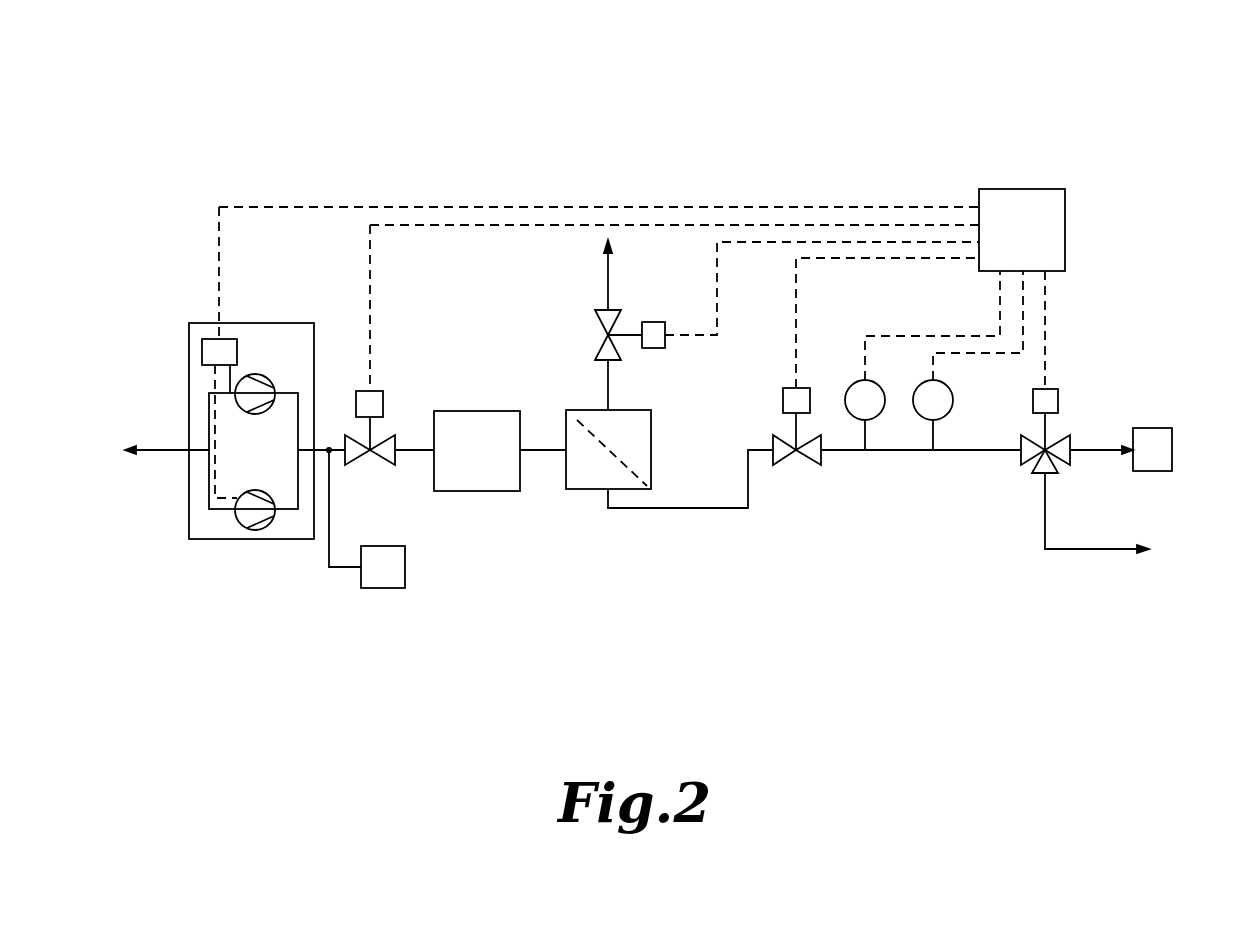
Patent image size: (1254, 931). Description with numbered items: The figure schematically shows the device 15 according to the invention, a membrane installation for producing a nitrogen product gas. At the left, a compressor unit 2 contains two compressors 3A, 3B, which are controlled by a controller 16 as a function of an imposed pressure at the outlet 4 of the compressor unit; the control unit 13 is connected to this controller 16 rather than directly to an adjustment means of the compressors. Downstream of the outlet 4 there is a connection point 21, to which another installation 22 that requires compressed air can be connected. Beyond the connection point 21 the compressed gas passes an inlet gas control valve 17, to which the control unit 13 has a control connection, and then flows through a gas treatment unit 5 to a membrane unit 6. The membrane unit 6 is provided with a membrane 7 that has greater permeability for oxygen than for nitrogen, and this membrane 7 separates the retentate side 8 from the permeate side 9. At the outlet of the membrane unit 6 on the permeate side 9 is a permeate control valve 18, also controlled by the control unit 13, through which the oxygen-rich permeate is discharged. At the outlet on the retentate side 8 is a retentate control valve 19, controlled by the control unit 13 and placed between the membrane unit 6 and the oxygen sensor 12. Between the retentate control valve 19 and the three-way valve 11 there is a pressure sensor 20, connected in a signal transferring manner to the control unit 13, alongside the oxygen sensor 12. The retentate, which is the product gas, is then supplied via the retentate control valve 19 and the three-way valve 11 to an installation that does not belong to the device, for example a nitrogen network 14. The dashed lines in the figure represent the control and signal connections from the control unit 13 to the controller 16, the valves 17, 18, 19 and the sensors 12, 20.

The compressor unit 2 is at (266, 323).
The compressor 3A is at (245, 393).
The compressor 3B is at (250, 515).
The outlet 4 is at (317, 450).
The gas treatment unit 5 is at (476, 472).
The membrane unit 6 is at (651, 410).
The membrane 7 is at (620, 458).
The retentate side 8 is at (595, 477).
The permeate side 9 is at (627, 432).
The three-way valve 11 is at (1035, 456).
The oxygen sensor 12 is at (880, 385).
The control unit 13 is at (1055, 230).
The nitrogen network 14 is at (1160, 443).
The device 15 is at (1070, 80).
The controller 16 is at (212, 351).
The inlet gas control valve 17 is at (374, 451).
The permeate control valve 18 is at (600, 322).
The retentate control valve 19 is at (791, 457).
The pressure sensor 20 is at (953, 394).
The connection point 21 is at (331, 458).
The installation 22 is at (390, 576).